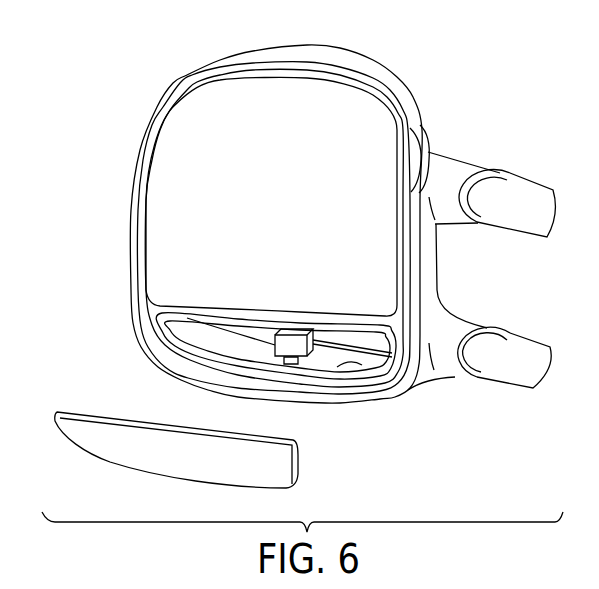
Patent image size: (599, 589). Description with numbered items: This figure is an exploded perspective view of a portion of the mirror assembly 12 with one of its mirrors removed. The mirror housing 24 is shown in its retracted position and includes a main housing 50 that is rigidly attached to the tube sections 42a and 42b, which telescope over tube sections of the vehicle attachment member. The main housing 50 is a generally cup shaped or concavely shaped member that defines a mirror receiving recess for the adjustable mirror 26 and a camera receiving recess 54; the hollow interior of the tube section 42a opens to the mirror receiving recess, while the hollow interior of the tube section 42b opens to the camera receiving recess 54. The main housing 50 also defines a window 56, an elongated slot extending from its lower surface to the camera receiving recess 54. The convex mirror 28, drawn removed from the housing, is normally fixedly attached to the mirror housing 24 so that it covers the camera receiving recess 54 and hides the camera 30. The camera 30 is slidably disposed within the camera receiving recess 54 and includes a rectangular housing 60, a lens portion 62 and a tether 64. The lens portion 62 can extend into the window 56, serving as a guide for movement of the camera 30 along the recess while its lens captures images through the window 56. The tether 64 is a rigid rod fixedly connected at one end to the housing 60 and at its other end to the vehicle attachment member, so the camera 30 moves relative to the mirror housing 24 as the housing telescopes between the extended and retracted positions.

The mirror assembly 12 is at (442, 47).
The mirror housing 24 is at (335, 62).
The adjustable mirror 26 is at (183, 162).
The convex mirror 28 is at (92, 437).
The camera 30 is at (267, 338).
The tube section 42a is at (532, 200).
The tube section 42b is at (510, 362).
The main housing 50 is at (253, 53).
The camera receiving recess 54 is at (187, 322).
The window 56 is at (342, 368).
The housing 60 is at (292, 342).
The lens portion 62 is at (293, 365).
The tether 64 is at (340, 345).